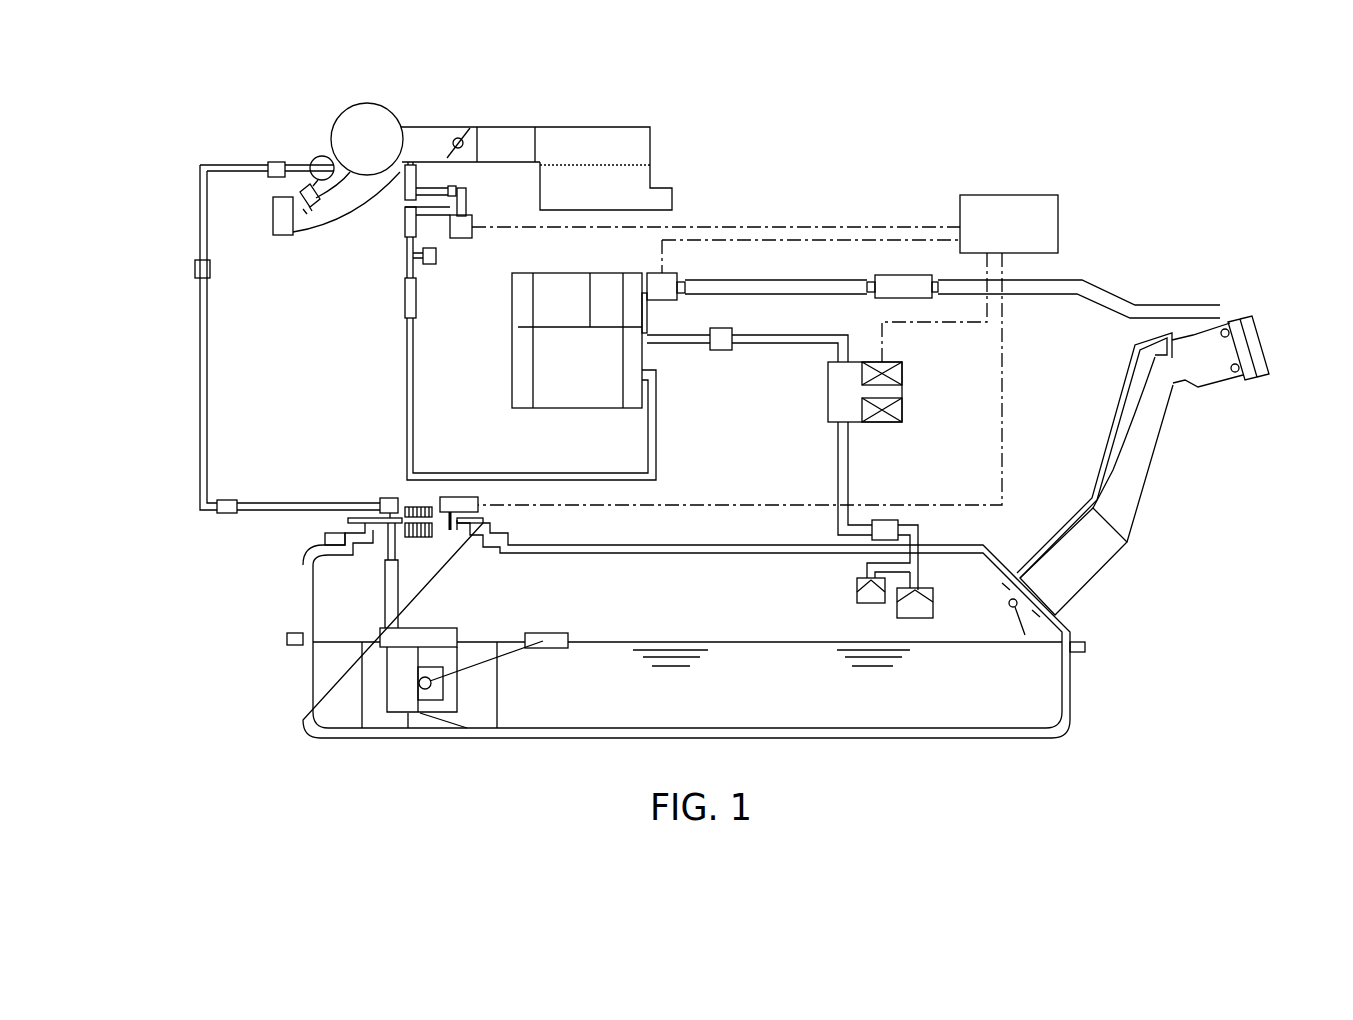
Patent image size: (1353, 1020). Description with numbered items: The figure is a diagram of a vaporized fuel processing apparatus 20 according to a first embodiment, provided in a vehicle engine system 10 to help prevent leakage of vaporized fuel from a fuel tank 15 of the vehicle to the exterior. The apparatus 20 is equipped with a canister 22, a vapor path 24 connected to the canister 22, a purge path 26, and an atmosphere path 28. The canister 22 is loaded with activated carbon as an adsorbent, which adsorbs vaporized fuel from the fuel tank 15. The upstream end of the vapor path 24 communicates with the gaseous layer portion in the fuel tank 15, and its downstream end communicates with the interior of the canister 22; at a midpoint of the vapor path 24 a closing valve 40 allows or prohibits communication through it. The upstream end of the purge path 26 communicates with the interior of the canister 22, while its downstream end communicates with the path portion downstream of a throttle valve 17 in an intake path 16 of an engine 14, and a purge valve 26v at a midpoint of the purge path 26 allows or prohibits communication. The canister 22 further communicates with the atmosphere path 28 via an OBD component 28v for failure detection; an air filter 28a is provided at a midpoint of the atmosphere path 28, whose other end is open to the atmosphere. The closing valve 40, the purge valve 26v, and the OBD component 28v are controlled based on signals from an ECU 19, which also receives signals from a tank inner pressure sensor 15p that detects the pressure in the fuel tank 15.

The vehicle engine system 10 is at (203, 124).
The engine 14 is at (281, 237).
The fuel tank 15 is at (1081, 690).
The tank inner pressure sensor 15p is at (463, 497).
The intake path 16 is at (333, 213).
The throttle valve 17 is at (458, 138).
The electric control unit (ECU) 19 is at (1022, 193).
The vaporized fuel processing apparatus 20 is at (770, 217).
The canister 22 is at (501, 373).
The vapor path 24 is at (828, 464).
The purge path 26 is at (405, 385).
The purge valve 26v is at (462, 240).
The atmosphere path 28 is at (798, 287).
The air filter 28a is at (900, 283).
The OBD component 28v is at (655, 275).
The closing valve 40 is at (877, 434).